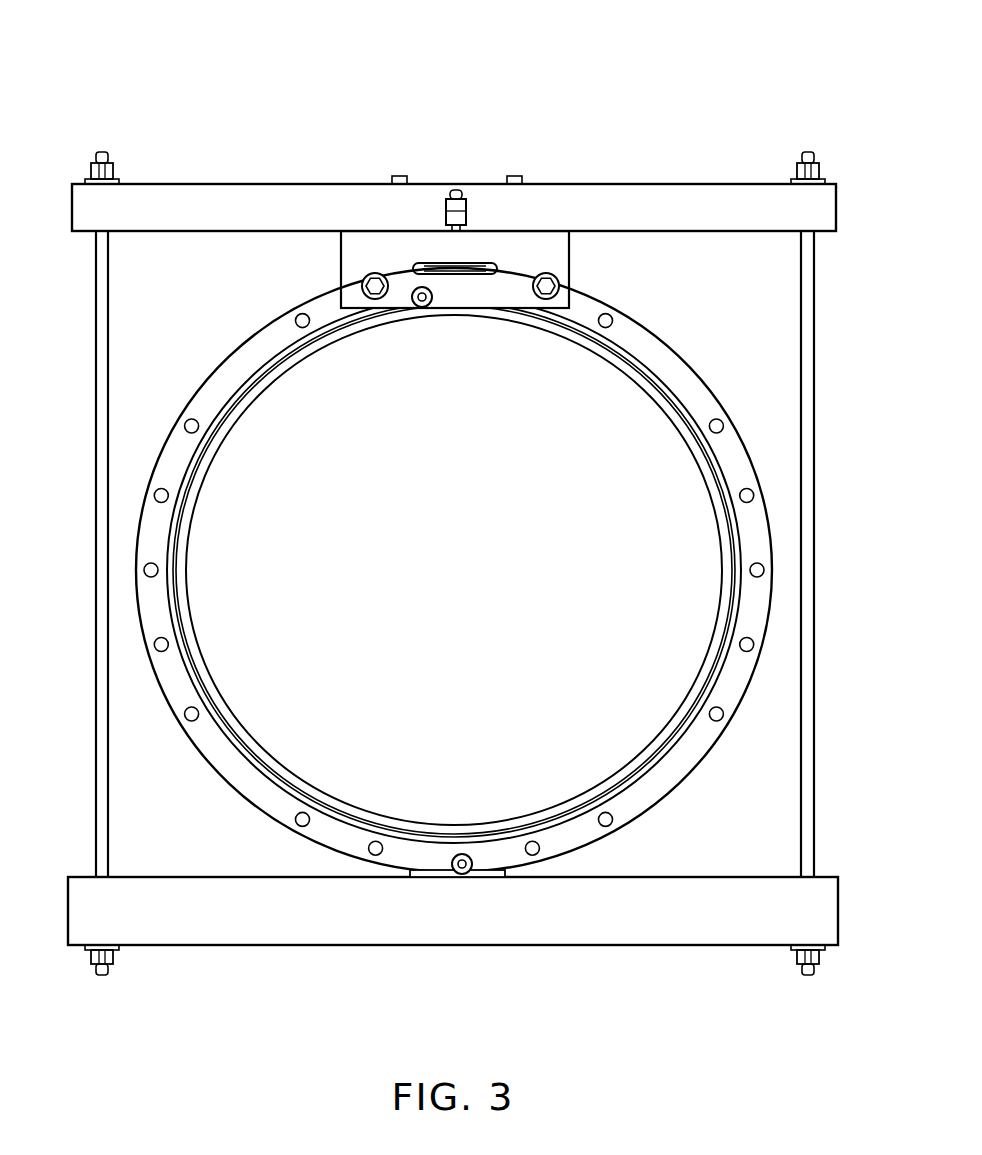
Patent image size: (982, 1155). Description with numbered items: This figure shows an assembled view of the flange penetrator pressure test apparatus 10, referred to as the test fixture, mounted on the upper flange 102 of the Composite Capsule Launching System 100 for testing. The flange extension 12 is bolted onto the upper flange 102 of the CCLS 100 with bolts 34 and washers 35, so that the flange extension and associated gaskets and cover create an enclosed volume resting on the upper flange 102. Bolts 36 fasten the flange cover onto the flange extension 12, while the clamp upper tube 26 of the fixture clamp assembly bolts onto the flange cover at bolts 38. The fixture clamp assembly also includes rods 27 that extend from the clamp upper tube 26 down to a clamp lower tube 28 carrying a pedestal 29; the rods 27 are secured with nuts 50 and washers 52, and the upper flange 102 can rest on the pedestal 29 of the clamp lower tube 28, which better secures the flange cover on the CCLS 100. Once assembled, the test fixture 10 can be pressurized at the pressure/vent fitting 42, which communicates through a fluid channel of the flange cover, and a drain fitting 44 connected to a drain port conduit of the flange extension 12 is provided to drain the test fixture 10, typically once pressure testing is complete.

The flange penetrator pressure test apparatus 10 is at (238, 96).
The flange extension 12 is at (468, 310).
The clamp upper tube 26 is at (172, 184).
The rods 27 is at (95, 540).
The clamp lower tube 28 is at (272, 948).
The pedestal 29 is at (490, 878).
The bolts 34 is at (560, 278).
The washers 35 is at (546, 286).
The bolts 36 is at (559, 226).
The bolts 38 is at (398, 177).
The pressure/vent fitting 42 is at (457, 190).
The drain fitting 44 is at (422, 309).
The nuts 50 is at (805, 152).
The washers 52 is at (822, 178).
The Composite Capsule Launching System (CCLS) 100 is at (433, 583).
The upper flange 102 is at (652, 330).